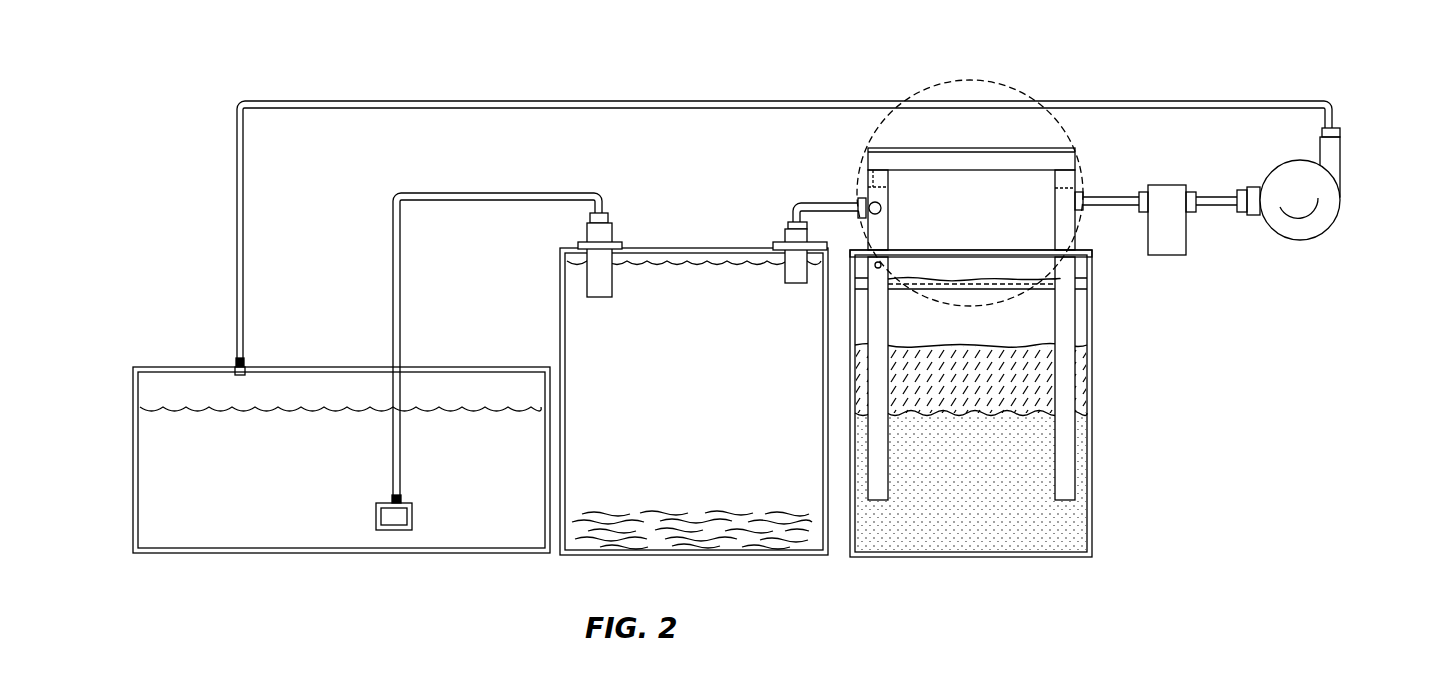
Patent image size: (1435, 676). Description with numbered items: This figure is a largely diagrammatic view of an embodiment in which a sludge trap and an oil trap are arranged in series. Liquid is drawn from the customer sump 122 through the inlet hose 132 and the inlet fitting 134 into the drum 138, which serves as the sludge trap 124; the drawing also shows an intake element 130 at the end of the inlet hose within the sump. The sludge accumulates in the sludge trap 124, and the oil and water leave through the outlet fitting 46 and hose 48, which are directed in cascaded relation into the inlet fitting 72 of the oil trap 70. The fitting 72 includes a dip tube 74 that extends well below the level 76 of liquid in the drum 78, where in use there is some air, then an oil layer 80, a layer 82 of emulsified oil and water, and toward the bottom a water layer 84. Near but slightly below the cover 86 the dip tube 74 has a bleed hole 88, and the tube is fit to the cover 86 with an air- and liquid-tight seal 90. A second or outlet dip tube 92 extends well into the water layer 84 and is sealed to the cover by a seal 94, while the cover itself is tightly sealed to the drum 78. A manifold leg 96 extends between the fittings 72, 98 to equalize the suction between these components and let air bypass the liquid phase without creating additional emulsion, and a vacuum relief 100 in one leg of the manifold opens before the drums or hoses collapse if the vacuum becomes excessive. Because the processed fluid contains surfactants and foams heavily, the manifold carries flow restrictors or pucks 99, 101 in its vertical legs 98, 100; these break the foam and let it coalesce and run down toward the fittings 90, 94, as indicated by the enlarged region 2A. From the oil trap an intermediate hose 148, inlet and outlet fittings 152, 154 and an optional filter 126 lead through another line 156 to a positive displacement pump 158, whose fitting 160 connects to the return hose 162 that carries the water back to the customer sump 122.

The enlarged detail region 2A is at (973, 82).
The outlet fitting 46 is at (786, 225).
The hose 48 is at (822, 203).
The oil trap 70 is at (1100, 396).
The inlet fitting 72 is at (890, 210).
The dip tube 74 is at (890, 382).
The liquid level 76 is at (973, 290).
The drum 78 is at (995, 461).
The oil layer 80 is at (992, 278).
The emulsified oil and water layer 82 is at (970, 342).
The water layer 84 is at (985, 410).
The cover 86 is at (953, 248).
The bleed hole 88 is at (876, 262).
The seal 90 is at (895, 248).
The outlet dip tube 92 is at (1070, 452).
The seal 94 is at (1073, 248).
The manifold leg 96 is at (952, 148).
The outlet fitting 98 is at (1080, 190).
The flow restrictor puck 99 is at (868, 150).
The vacuum relief 100 is at (868, 175).
The flow restrictor puck 101 is at (1077, 148).
The customer sump 122 is at (513, 451).
The sludge trap 124 is at (720, 419).
The filter 126 is at (1165, 256).
The intake 130 is at (412, 513).
The inlet hose 132 is at (398, 280).
The inlet fitting 134 is at (609, 233).
The drum 138 is at (706, 561).
The intermediate hose 148 is at (1107, 197).
The inlet fitting 152 is at (1139, 190).
The outlet fitting 154 is at (1192, 192).
The line 156 is at (1213, 208).
The positive displacement pump 158 is at (1340, 196).
The fitting 160 is at (1337, 132).
The return hose 162 is at (582, 100).